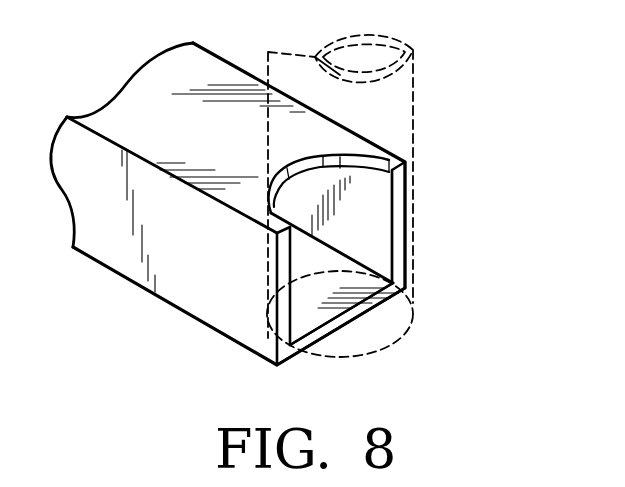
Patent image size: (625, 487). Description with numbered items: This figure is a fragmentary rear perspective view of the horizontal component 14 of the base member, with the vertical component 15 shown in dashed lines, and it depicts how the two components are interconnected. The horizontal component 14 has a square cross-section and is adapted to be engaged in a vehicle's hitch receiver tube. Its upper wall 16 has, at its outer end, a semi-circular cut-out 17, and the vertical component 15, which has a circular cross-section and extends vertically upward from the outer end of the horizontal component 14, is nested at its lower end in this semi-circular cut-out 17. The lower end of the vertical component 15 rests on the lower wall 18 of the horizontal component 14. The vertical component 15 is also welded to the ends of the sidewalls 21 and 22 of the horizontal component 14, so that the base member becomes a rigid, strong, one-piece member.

The horizontal component 14 is at (243, 70).
The vertical component 15 is at (413, 120).
The upper wall 16 is at (143, 103).
The semi-circular cut-out 17 is at (315, 177).
The lower wall 18 is at (337, 333).
The sidewall 21 is at (398, 255).
The sidewall 22 is at (175, 293).